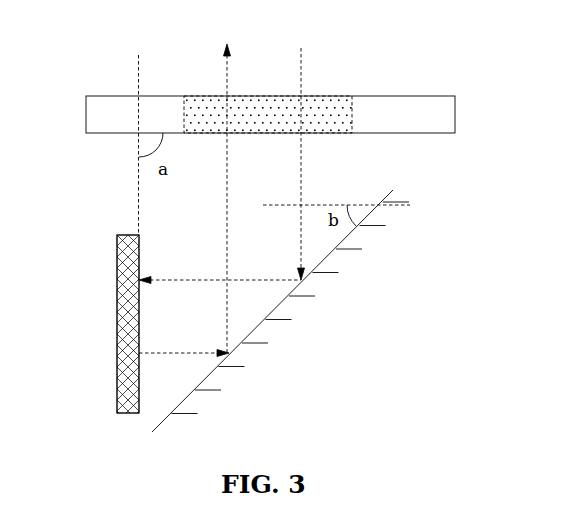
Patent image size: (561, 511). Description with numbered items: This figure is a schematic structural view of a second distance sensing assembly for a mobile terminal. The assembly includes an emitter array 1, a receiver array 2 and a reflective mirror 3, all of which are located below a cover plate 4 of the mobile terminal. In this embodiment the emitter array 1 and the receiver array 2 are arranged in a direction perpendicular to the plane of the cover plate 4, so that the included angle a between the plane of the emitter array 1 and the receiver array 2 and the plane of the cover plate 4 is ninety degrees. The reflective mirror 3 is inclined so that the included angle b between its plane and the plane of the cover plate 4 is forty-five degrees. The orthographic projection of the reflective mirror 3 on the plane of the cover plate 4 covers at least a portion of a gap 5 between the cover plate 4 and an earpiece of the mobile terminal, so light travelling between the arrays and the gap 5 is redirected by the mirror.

The emitter array 1 is at (117, 362).
The receiver array 2 is at (117, 270).
The reflective mirror 3 is at (329, 252).
The cover plate 4 is at (408, 96).
The gap 5 is at (270, 96).